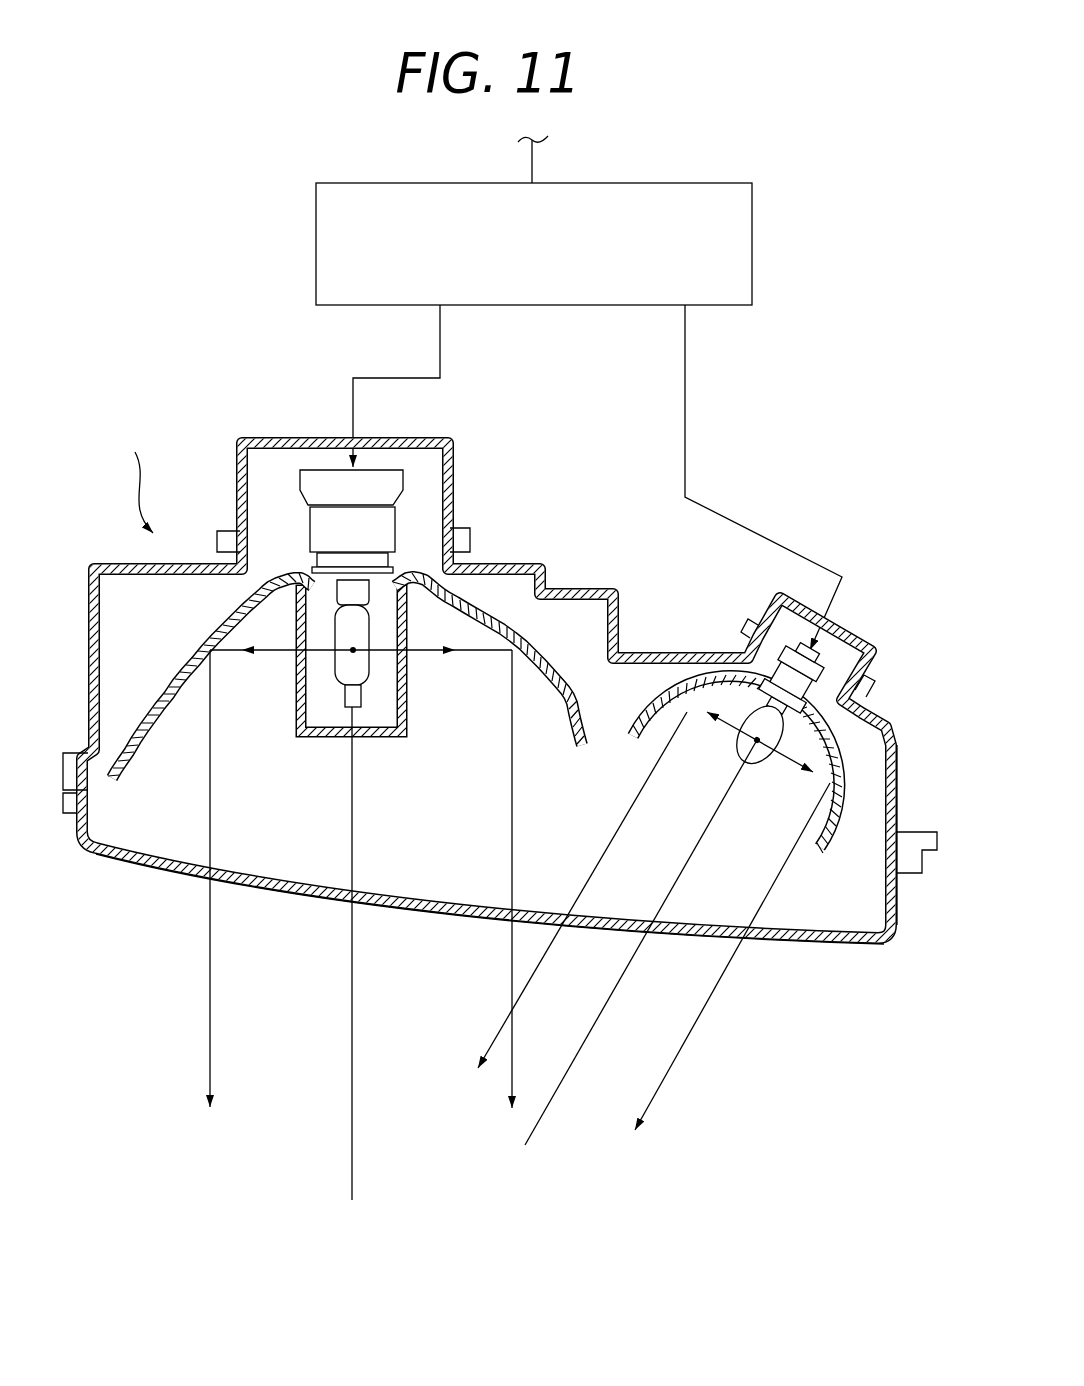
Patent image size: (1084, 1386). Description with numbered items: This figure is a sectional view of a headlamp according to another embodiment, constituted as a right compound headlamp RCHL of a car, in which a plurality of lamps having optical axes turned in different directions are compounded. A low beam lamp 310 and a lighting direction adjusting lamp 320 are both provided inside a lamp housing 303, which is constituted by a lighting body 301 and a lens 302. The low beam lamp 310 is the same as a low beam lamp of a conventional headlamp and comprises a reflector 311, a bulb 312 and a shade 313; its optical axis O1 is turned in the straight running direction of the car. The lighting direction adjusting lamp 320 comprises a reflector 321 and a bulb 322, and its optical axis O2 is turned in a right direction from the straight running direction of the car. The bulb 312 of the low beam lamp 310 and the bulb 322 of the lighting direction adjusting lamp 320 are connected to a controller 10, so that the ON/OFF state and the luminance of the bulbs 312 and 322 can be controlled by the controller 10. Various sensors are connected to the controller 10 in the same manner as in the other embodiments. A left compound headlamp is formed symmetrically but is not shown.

The controller 10 is at (718, 181).
The lighting body 301 is at (545, 560).
The lens 302 is at (397, 915).
The lamp housing 303 is at (866, 910).
The low beam lamp 310 is at (346, 789).
The reflector 311 is at (573, 750).
The bulb 312 is at (338, 683).
The shade 313 is at (400, 745).
The lighting direction adjusting lamp 320 is at (660, 883).
The reflector 321 is at (643, 750).
The bulb 322 is at (740, 745).
The right compound headlamp RCHL is at (143, 477).
The optical axis O1 is at (352, 970).
The optical axis O2 is at (632, 958).